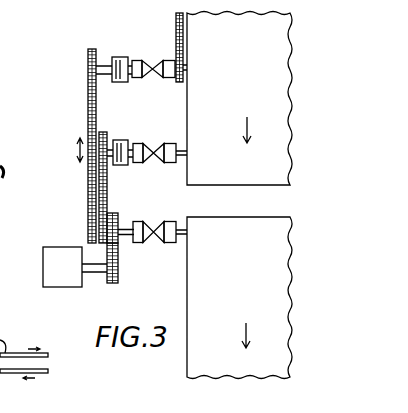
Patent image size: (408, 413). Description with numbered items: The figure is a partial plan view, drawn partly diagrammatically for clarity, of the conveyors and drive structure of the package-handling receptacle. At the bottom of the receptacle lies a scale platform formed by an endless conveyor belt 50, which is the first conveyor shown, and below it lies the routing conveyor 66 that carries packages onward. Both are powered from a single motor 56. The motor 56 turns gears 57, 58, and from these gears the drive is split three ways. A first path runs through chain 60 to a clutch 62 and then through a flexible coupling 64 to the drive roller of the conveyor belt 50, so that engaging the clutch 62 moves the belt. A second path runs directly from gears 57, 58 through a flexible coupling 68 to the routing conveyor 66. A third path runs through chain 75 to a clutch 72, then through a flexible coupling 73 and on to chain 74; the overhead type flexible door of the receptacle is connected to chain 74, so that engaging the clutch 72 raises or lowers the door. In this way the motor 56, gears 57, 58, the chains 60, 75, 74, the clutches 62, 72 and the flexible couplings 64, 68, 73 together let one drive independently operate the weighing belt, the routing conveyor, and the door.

The endless conveyor belt 50 is at (239, 99).
The routing conveyor 66 is at (239, 298).
The motor 56 is at (43, 274).
The gear 57 is at (118, 273).
The gear 58 is at (118, 217).
The chain 60 is at (107, 190).
The chain 75 is at (88, 105).
The chain 74 is at (176, 37).
The clutch 72 is at (120, 57).
The flexible coupling 73 is at (153, 71).
The clutch 62 is at (123, 140).
The flexible coupling 64 is at (154, 148).
The flexible coupling 68 is at (154, 243).